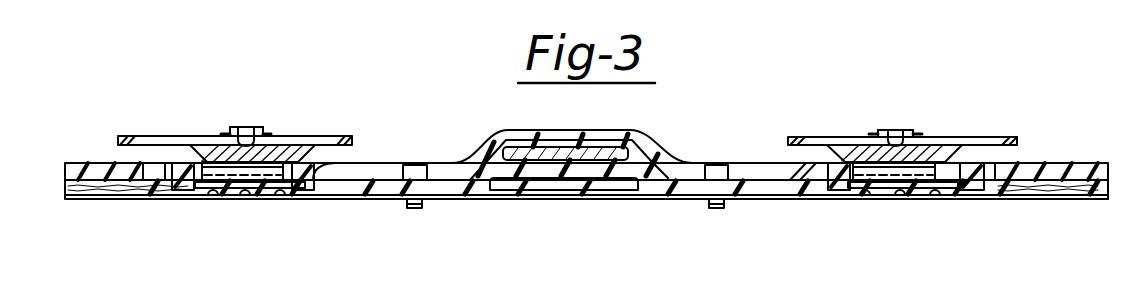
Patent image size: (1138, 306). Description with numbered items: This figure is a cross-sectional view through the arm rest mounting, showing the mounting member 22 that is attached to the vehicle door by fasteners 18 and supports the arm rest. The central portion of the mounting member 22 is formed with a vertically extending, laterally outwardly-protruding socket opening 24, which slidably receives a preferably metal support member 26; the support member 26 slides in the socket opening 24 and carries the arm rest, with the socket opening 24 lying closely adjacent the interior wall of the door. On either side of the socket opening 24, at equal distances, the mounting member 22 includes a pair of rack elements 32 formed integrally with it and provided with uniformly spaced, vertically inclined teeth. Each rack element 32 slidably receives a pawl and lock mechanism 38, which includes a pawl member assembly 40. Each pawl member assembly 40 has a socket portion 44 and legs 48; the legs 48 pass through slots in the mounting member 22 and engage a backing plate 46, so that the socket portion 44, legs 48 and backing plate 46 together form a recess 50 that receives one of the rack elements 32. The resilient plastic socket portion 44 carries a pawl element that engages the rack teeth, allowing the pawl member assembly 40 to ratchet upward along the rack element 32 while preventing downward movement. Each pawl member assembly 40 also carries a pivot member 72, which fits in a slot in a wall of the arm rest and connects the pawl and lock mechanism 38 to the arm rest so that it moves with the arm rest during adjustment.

The fasteners 18 is at (414, 207).
The mounting member 22 is at (457, 183).
The socket opening 24 is at (565, 100).
The support member 26 is at (563, 155).
The rack elements 32 is at (252, 172).
The pawl and lock mechanism 38 is at (264, 121).
The pawl member assembly 40 is at (296, 147).
The socket portion 44 is at (206, 152).
The backing plate 46 is at (270, 186).
The legs 48 is at (187, 166).
The recess 50 is at (218, 160).
The pivot member 72 is at (272, 129).